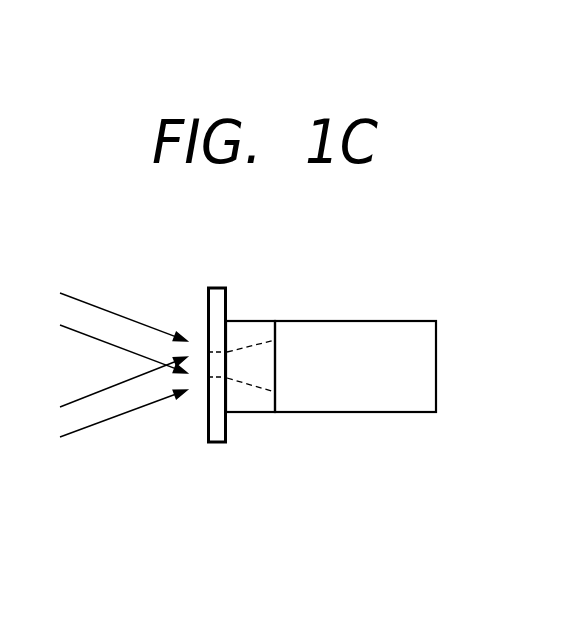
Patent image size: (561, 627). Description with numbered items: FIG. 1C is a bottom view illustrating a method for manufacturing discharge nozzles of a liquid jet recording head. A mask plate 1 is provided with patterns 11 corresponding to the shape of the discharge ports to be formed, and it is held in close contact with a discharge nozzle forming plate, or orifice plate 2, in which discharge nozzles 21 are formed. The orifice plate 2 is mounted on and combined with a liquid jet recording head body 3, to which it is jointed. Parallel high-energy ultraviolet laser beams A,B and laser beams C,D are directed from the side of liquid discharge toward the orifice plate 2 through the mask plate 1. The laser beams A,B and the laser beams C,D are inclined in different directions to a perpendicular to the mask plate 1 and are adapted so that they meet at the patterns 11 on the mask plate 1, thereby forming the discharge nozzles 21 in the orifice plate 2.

The mask plate 1 is at (214, 437).
The discharge nozzle forming plate (orifice plate) 2 is at (253, 407).
The liquid jet recording head body 3 is at (372, 400).
The patterns 11 is at (233, 356).
The discharge nozzles 21 is at (267, 370).
The laser beams A,B is at (115, 326).
The laser beams C,D is at (110, 402).